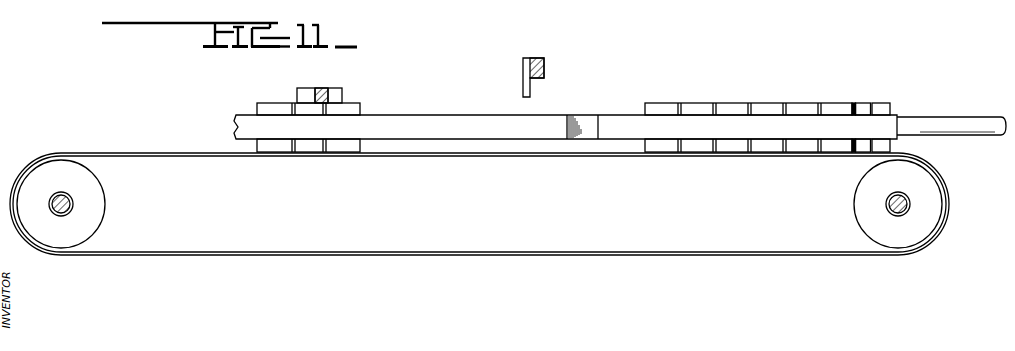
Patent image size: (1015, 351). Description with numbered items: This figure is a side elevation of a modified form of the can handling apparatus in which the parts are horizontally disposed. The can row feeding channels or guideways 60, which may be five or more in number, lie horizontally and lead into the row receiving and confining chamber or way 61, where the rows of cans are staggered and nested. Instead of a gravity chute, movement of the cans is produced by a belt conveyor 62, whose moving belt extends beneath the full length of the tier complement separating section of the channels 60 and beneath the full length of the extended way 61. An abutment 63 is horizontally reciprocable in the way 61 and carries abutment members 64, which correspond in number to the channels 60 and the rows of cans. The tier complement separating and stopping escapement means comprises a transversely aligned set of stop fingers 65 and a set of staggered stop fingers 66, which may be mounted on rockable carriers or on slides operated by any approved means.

The can row feeding channels or guideways 60 is at (430, 123).
The row receiving and confining chamber or way 61 is at (693, 122).
The belt conveyor 62 is at (522, 156).
The abutment 63 is at (882, 103).
The abutment members 64 is at (842, 105).
The transversely aligned stop fingers 65 is at (525, 90).
The staggered stop fingers 66 is at (315, 89).